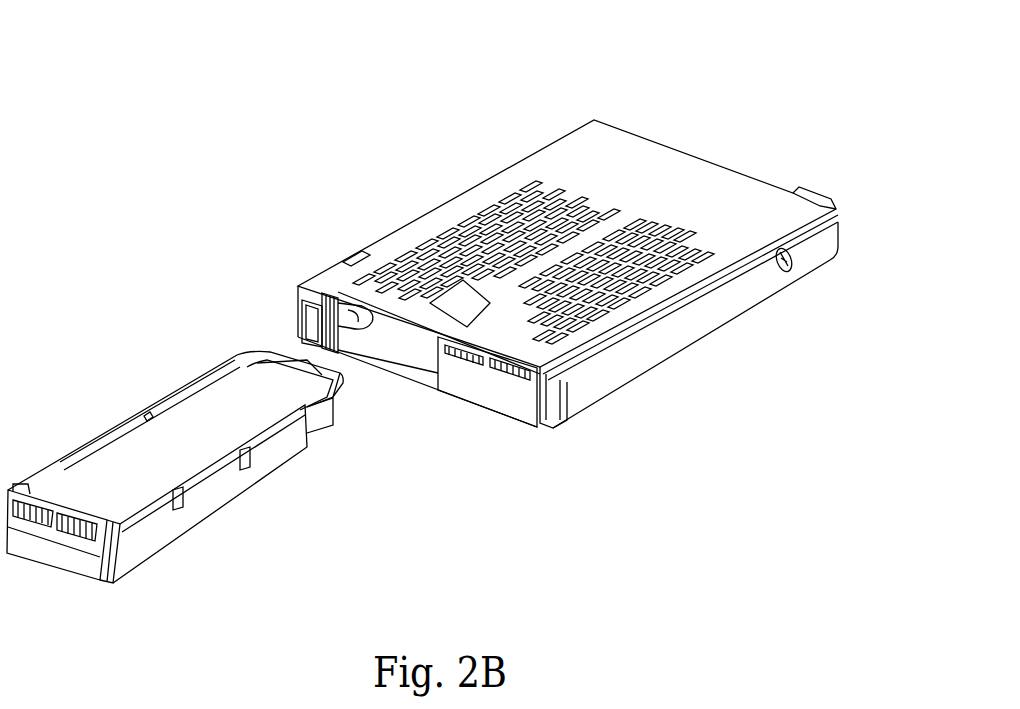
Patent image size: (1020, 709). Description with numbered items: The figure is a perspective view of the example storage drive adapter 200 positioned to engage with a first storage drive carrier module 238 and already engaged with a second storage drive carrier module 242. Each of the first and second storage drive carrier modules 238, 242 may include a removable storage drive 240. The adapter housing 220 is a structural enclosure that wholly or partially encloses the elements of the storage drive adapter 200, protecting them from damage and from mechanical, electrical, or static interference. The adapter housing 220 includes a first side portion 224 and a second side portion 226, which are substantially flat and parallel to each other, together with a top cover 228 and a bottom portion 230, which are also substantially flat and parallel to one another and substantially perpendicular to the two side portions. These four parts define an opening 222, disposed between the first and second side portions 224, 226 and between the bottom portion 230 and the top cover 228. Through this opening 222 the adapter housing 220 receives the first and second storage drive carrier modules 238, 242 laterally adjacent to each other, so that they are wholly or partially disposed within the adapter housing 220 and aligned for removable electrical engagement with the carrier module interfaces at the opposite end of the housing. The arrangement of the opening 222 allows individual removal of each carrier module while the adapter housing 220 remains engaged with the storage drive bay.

The storage drive adapter 200 is at (193, 168).
The adapter housing 220 is at (750, 347).
The opening 222 is at (398, 336).
The first side portion 224 is at (488, 179).
The second side portion 226 is at (808, 258).
The top cover 228 is at (620, 148).
The bottom portion 230 is at (639, 377).
The first storage drive carrier module 238 is at (133, 374).
The removable storage drive 240 is at (210, 413).
The second storage drive carrier module 242 is at (500, 393).